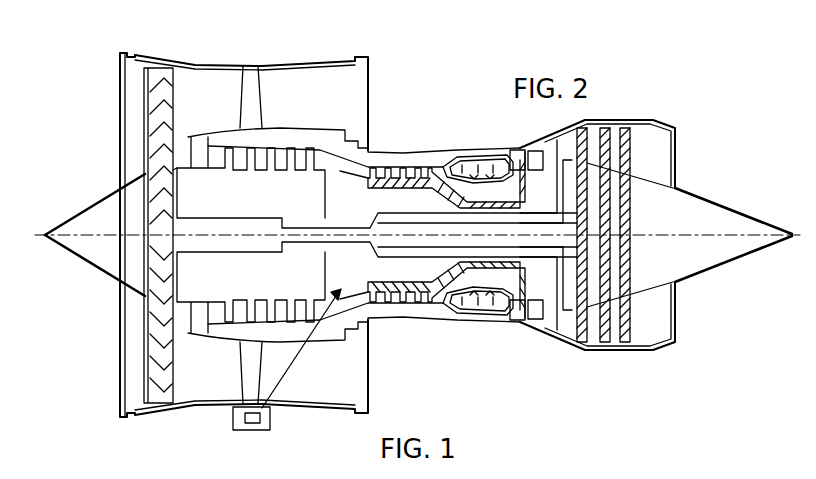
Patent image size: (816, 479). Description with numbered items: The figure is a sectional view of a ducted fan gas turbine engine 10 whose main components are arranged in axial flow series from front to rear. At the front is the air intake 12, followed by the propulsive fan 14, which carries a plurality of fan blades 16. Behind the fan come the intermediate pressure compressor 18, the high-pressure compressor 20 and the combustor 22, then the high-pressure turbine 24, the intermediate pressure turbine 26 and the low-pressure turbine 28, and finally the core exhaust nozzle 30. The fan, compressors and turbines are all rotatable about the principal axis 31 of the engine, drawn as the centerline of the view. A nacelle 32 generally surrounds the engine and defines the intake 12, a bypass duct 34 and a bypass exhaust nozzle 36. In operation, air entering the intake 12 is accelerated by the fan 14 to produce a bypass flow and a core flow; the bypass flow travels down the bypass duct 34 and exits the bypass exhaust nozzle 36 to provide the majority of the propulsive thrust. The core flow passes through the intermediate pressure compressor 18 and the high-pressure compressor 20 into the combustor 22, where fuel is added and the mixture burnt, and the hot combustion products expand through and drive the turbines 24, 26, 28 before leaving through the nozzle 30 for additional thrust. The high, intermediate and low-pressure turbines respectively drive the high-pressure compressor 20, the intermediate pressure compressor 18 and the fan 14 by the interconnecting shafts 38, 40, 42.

The ducted fan gas turbine engine 10 is at (417, 240).
The air intake 12 is at (104, 366).
The propulsive fan 14 is at (148, 399).
The fan blades 16 is at (157, 350).
The intermediate pressure compressor 18 is at (248, 160).
The high-pressure compressor 20 is at (385, 302).
The combustor 22 is at (473, 318).
The high-pressure turbine 24 is at (522, 330).
The intermediate pressure turbine 26 is at (563, 341).
The low-pressure turbine 28 is at (610, 348).
The core exhaust nozzle 30 is at (679, 318).
The principal axis 31 is at (46, 233).
The nacelle 32 is at (226, 64).
The bypass duct 34 is at (305, 80).
The bypass exhaust nozzle 36 is at (344, 92).
The interconnecting shaft 38 is at (262, 408).
The interconnecting shaft 40 is at (448, 218).
The interconnecting shaft 42 is at (490, 181).